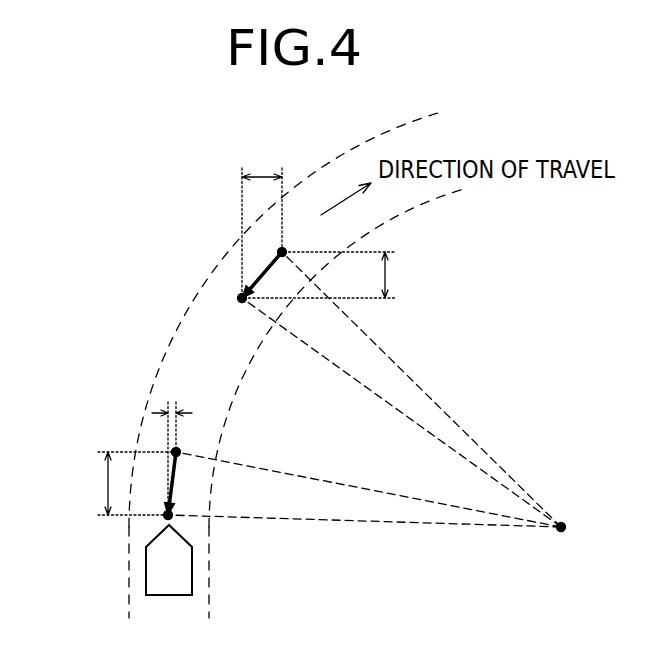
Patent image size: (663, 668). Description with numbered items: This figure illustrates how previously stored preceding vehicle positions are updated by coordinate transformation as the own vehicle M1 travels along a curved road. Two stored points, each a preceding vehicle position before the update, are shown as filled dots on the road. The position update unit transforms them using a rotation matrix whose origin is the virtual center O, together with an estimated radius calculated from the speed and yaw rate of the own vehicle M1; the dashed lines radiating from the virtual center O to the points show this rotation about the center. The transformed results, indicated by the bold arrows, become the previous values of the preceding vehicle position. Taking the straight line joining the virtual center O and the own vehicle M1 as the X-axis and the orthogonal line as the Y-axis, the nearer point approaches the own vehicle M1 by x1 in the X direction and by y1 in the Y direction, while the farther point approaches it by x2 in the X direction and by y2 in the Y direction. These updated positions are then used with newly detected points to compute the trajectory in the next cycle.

The virtual center O is at (561, 543).
The own vehicle M1 is at (162, 596).
The X-axial displacement x1 is at (172, 447).
The Y-axial displacement y1 is at (126, 483).
The X-axial displacement x2 is at (262, 222).
The Y-axial displacement y2 is at (330, 275).